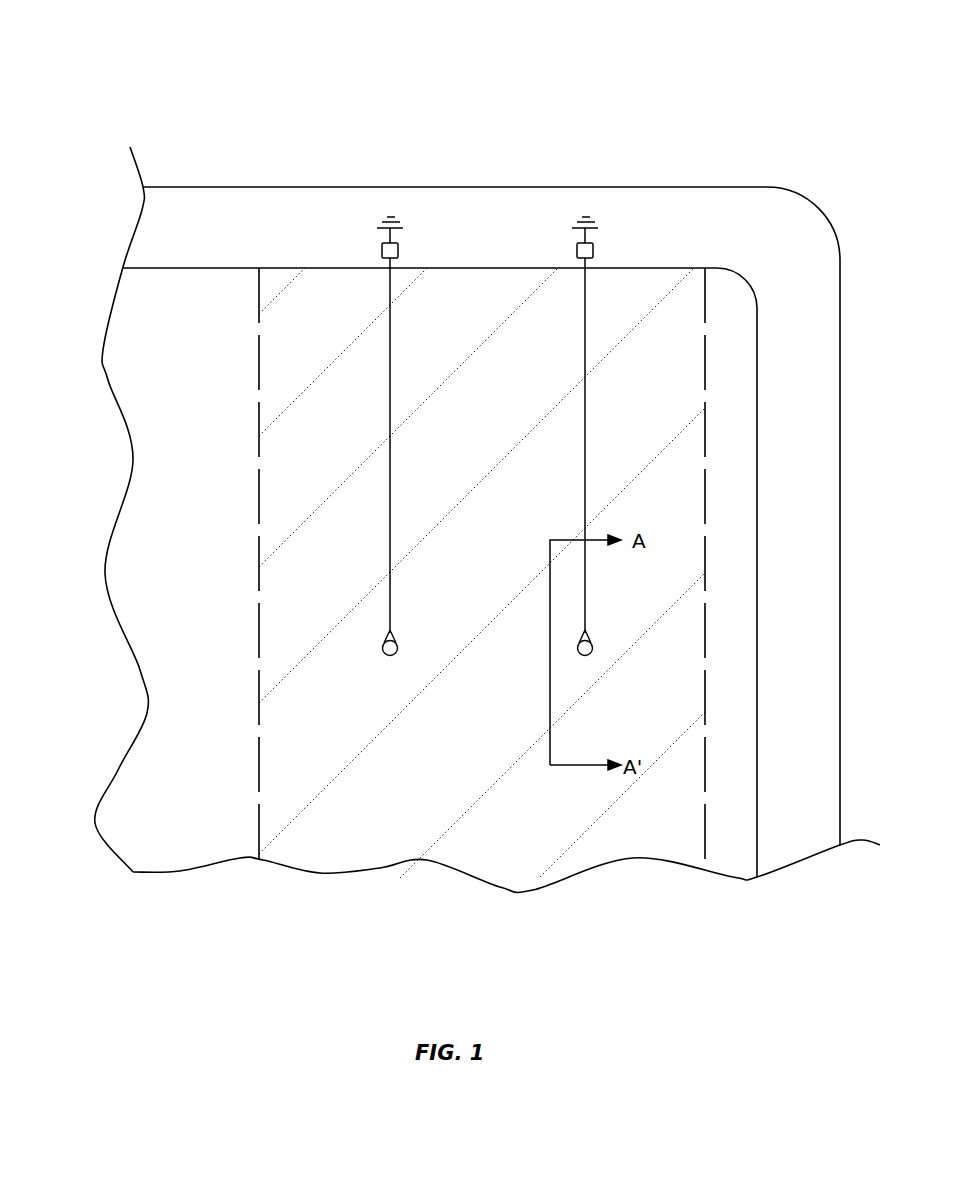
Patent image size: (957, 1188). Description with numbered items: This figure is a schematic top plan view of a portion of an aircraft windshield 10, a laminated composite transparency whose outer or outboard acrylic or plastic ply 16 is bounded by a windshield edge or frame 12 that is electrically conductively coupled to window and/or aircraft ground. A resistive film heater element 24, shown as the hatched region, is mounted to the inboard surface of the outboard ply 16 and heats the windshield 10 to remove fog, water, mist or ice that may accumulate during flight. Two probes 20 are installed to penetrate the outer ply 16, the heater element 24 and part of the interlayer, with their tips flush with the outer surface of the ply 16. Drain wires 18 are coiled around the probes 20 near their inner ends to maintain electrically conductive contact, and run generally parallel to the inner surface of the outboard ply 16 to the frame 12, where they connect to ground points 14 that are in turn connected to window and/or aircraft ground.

The windshield 10 is at (750, 80).
The windshield edge or frame 12 is at (250, 217).
The ground points 14 is at (577, 247).
The outer or outboard acrylic or plastic ply 16 is at (165, 472).
The drain wires 18 is at (390, 350).
The probes 20 is at (383, 653).
The resistive film heater element 24 is at (352, 848).